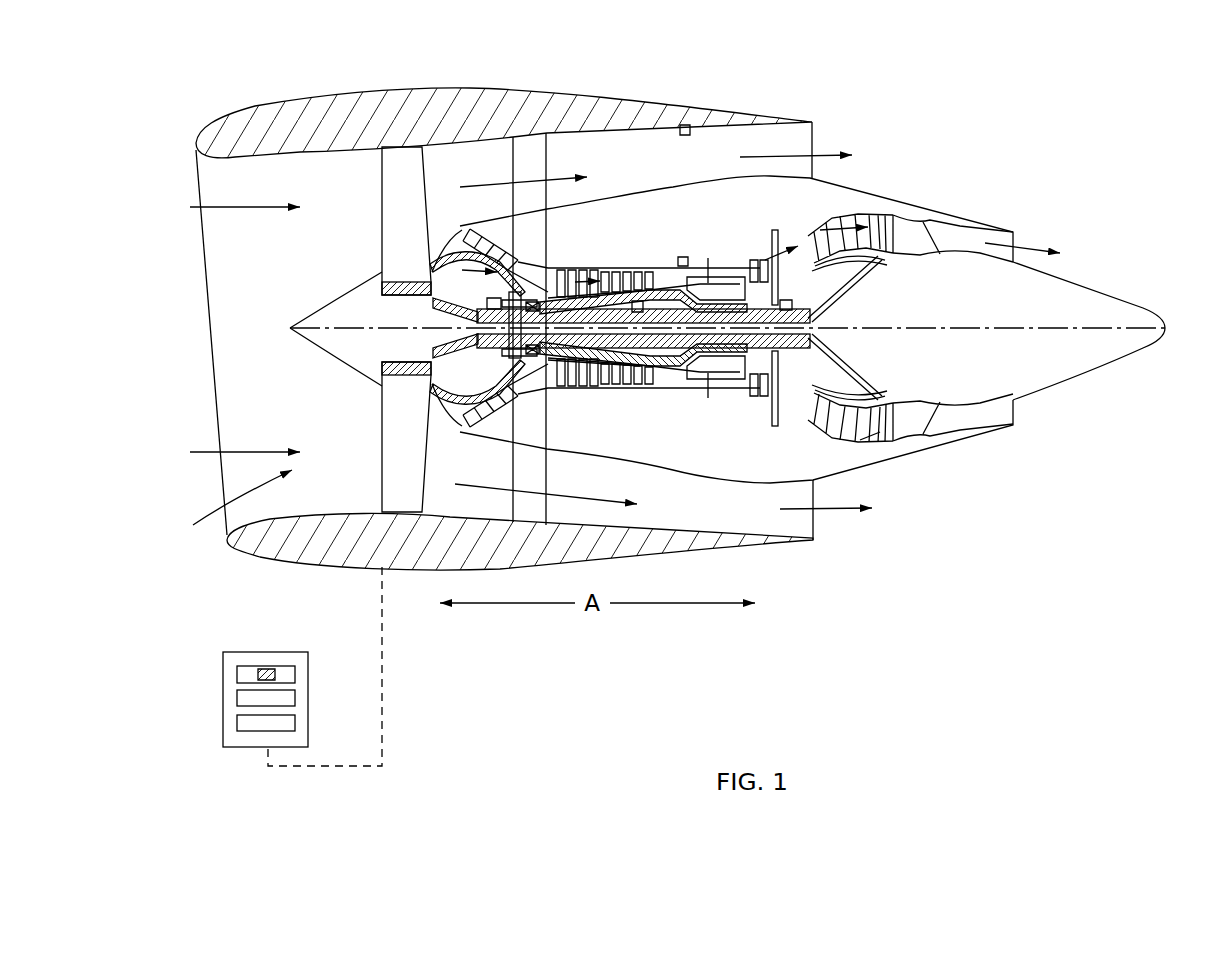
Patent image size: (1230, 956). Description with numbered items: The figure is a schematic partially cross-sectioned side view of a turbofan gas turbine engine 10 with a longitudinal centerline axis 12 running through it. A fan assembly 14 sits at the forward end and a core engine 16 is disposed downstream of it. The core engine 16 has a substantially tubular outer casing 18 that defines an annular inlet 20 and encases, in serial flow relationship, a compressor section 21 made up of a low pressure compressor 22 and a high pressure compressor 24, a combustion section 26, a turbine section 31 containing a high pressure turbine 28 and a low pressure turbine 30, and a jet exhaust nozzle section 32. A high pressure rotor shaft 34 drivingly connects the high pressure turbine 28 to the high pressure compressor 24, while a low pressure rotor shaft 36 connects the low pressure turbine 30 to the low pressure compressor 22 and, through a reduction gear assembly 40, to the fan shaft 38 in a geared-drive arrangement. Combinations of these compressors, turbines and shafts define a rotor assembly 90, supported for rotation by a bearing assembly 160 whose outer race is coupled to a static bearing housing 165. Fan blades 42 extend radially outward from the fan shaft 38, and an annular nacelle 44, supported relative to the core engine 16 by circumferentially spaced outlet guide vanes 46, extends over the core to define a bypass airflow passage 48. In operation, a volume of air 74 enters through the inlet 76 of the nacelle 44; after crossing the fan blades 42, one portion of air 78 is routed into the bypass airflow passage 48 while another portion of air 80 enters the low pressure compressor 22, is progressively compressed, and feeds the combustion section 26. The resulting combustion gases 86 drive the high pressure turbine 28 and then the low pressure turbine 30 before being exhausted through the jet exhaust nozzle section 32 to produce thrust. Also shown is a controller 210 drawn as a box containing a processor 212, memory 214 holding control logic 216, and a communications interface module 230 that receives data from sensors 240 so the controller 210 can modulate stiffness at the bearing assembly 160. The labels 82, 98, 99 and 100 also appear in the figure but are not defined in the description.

The gas turbine engine 10 is at (937, 105).
The axial centerline axis 12 is at (960, 326).
The fan assembly 14 is at (448, 158).
The core engine 16 is at (718, 165).
The outer casing 18 is at (687, 474).
The annular inlet 20 is at (458, 425).
The compressor section 21 is at (559, 400).
The low pressure compressor 22 is at (500, 393).
The high pressure compressor 24 is at (573, 386).
The combustion section 26 is at (722, 402).
The high pressure turbine 28 is at (780, 380).
The low pressure turbine 30 is at (884, 450).
The turbine section 31 is at (792, 430).
The jet exhaust nozzle section 32 is at (944, 436).
The high pressure rotor shaft 34 is at (775, 300).
The low pressure rotor shaft 36 is at (840, 270).
The fan shaft 38 is at (445, 302).
The reduction gear assembly 40 is at (497, 300).
The fan blades 42 is at (396, 182).
The nacelle 44 is at (384, 92).
The outlet guide vanes 46 is at (548, 162).
The bypass airflow passage 48 is at (634, 175).
The volume of air 74 is at (225, 205).
The inlet 76 is at (232, 514).
The bypass air 78 is at (502, 180).
The core air 80 is at (460, 225).
The compressed air 82 is at (557, 268).
The combustion gases 86 is at (750, 262).
The rotor assembly 90 is at (622, 272).
The aft end 98 is at (1172, 332).
The forward end 99 is at (175, 332).
The frame 100 is at (772, 396).
The bearing assembly 160 is at (460, 347).
The bearing housing 165 is at (505, 352).
The controller 210 is at (305, 652).
The processor 212 is at (295, 698).
The memory 214 is at (293, 680).
The control logic 216 is at (260, 680).
The communications interface module 230 is at (295, 722).
The sensor 240 is at (686, 124).